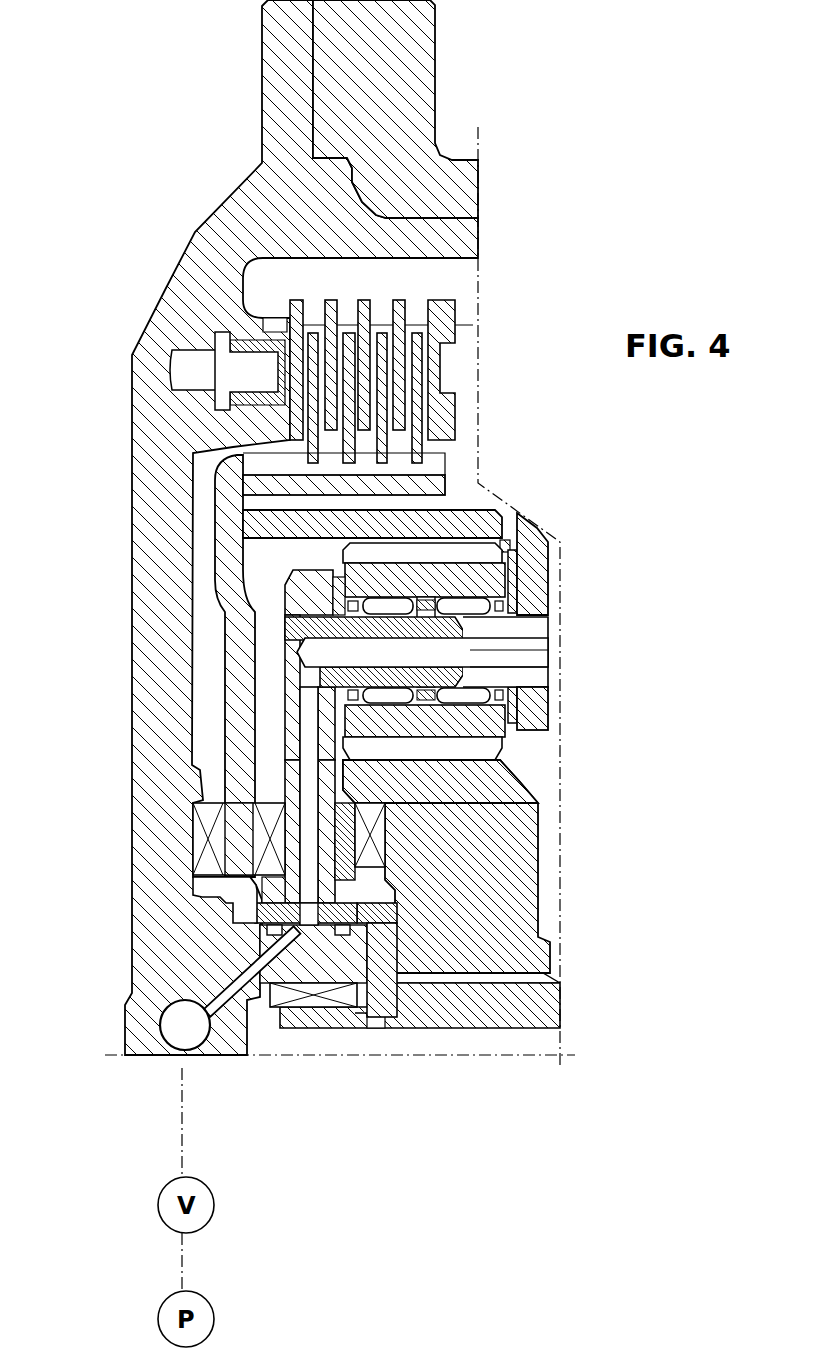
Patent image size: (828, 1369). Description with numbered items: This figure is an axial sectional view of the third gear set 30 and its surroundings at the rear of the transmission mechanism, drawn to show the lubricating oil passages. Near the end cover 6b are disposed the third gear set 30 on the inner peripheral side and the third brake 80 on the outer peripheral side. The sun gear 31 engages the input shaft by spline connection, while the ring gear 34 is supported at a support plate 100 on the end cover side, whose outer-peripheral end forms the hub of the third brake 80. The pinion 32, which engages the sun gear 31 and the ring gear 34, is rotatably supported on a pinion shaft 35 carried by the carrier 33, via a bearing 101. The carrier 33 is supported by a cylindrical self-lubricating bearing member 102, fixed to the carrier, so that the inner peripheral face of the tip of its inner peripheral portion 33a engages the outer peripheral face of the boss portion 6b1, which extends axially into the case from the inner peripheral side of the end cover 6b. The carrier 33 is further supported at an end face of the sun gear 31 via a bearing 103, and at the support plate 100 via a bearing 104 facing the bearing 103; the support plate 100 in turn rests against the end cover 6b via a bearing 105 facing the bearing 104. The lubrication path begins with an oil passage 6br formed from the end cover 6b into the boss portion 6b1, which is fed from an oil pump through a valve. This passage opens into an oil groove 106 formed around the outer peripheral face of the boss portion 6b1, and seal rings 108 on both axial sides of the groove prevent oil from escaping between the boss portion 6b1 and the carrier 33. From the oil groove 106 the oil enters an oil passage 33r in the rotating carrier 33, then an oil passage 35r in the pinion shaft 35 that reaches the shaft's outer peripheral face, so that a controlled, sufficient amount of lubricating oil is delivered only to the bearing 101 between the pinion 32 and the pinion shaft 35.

The end cover 6b is at (262, 100).
The third brake 80 is at (352, 285).
The ring gear 34 is at (263, 522).
The support plate 100 is at (230, 613).
The pinion 32 is at (502, 552).
The carrier 33 is at (282, 710).
The oil passage 33r is at (307, 737).
The inner peripheral portion 33a is at (293, 837).
The pinion shaft 35 is at (490, 673).
The oil passage 35r is at (373, 657).
The bearing 101 is at (465, 695).
The sun gear 31 is at (477, 947).
The bearing 103 is at (380, 840).
The bearing member 102 is at (370, 915).
The oil groove 106 is at (310, 930).
The seal rings 108 is at (274, 935).
The boss portion 6b1 is at (333, 957).
The bearing 104 is at (260, 845).
The bearing 105 is at (208, 818).
The oil passage 6br is at (243, 985).
The third gear set 30 is at (577, 637).